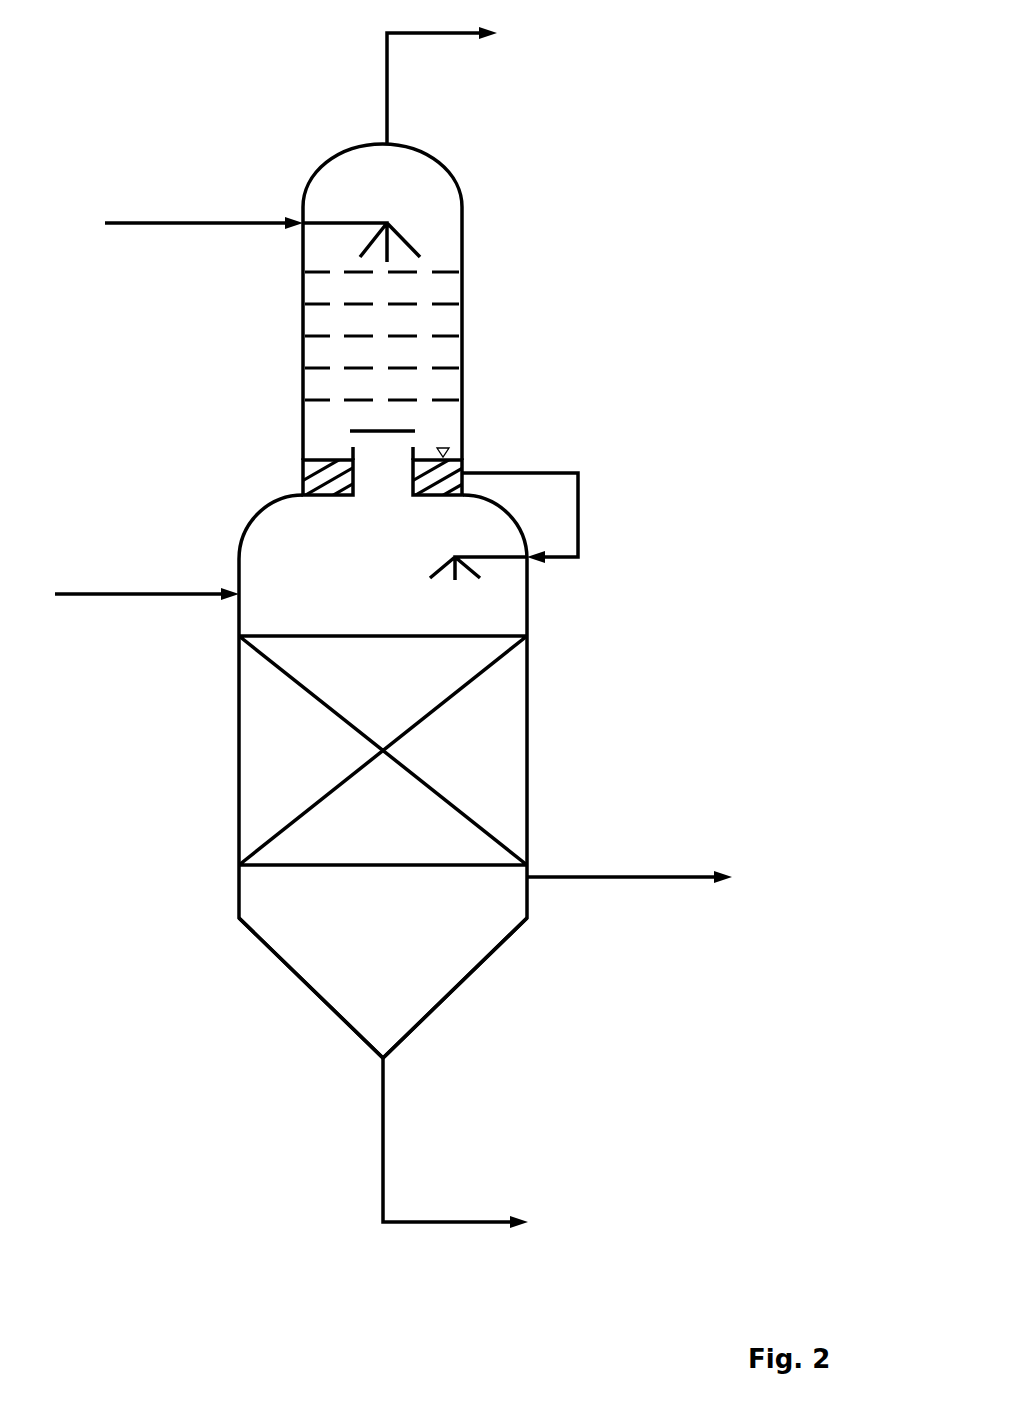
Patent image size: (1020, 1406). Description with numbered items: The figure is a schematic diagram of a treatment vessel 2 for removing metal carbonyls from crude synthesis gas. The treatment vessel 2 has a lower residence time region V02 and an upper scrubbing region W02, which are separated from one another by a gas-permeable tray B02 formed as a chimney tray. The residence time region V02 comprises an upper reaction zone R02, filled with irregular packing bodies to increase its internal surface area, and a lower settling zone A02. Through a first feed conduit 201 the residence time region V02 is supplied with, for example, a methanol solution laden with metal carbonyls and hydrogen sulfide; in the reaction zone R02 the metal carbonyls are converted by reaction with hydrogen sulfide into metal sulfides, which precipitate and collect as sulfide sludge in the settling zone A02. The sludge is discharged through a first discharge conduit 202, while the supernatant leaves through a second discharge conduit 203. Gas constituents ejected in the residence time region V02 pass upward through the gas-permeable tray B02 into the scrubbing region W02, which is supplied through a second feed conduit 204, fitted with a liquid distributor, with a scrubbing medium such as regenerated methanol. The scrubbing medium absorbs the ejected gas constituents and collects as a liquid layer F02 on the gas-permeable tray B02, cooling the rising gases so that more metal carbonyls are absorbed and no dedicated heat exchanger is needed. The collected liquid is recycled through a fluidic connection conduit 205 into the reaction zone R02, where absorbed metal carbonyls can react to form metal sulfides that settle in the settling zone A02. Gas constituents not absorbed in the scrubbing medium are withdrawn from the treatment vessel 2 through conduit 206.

The treatment vessel 2 is at (712, 1132).
The scrubbing region W02 is at (463, 335).
The liquid layer F02 is at (315, 460).
The gas-permeable tray B02 is at (303, 477).
The residence time region V02 is at (247, 530).
The reaction zone R02 is at (202, 636).
The settling zone A02 is at (563, 910).
The first feed conduit 201 is at (147, 584).
The first discharge conduit 202 is at (455, 1154).
The second discharge conduit 203 is at (629, 866).
The second feed conduit 204 is at (262, 229).
The fluidic connection conduit 205 is at (504, 511).
The gas withdrawal conduit 206 is at (442, 73).